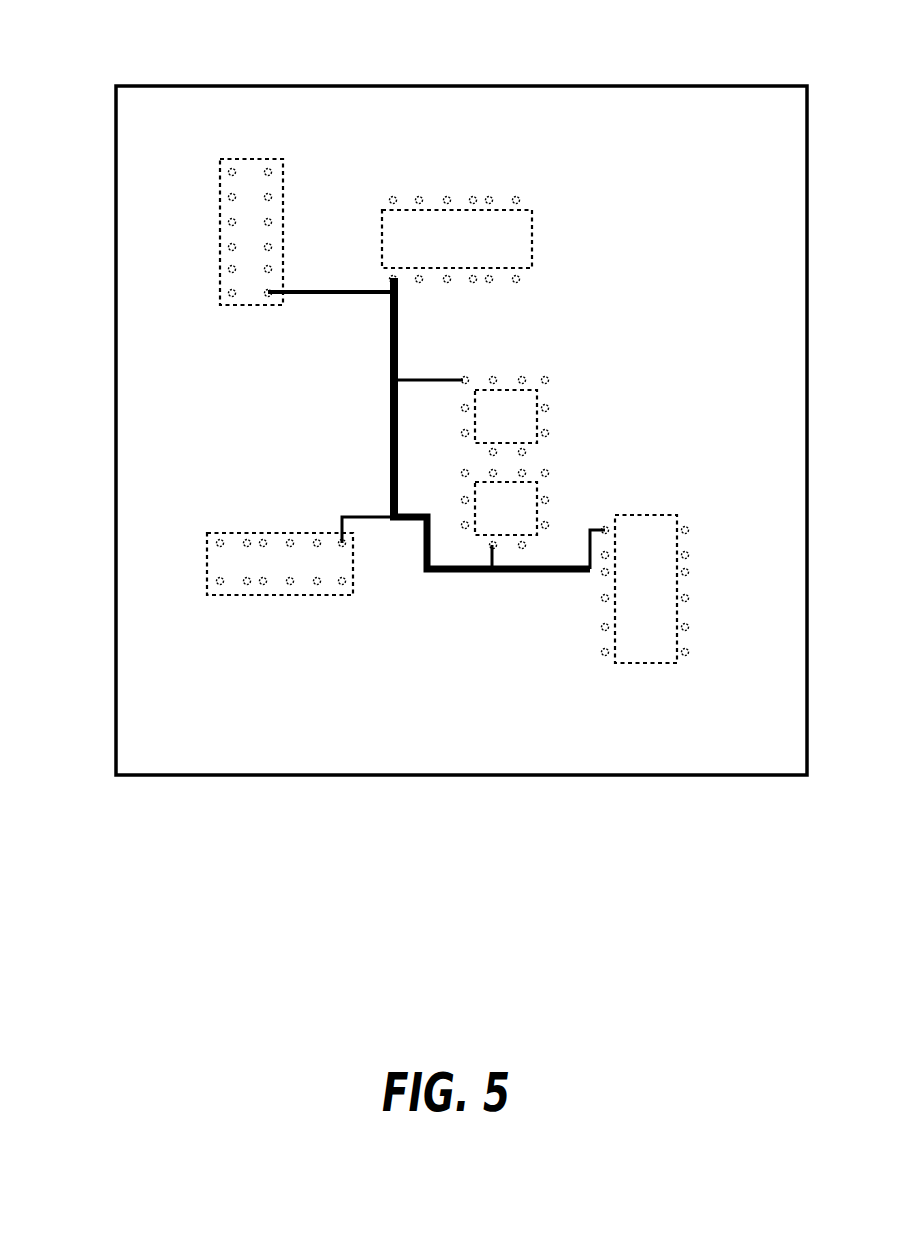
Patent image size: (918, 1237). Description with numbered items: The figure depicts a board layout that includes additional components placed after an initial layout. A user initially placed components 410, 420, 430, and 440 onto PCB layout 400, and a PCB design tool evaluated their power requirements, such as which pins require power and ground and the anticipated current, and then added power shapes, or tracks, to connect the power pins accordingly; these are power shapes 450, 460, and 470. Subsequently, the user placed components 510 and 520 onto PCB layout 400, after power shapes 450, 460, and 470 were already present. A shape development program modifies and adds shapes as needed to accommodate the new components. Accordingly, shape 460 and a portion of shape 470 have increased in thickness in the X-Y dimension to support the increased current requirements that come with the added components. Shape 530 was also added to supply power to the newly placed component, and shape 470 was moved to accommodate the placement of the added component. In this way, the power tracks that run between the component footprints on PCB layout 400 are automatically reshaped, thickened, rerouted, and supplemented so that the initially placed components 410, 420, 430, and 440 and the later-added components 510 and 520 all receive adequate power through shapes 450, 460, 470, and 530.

The PCB layout 400 is at (429, 399).
The component 410 is at (223, 212).
The component 420 is at (457, 218).
The component 430 is at (274, 546).
The component 440 is at (656, 564).
The power shape 450 is at (332, 316).
The power shape 460 is at (353, 397).
The power shape 470 is at (473, 568).
The component 510 is at (539, 413).
The component 520 is at (539, 503).
The shape 530 is at (481, 455).